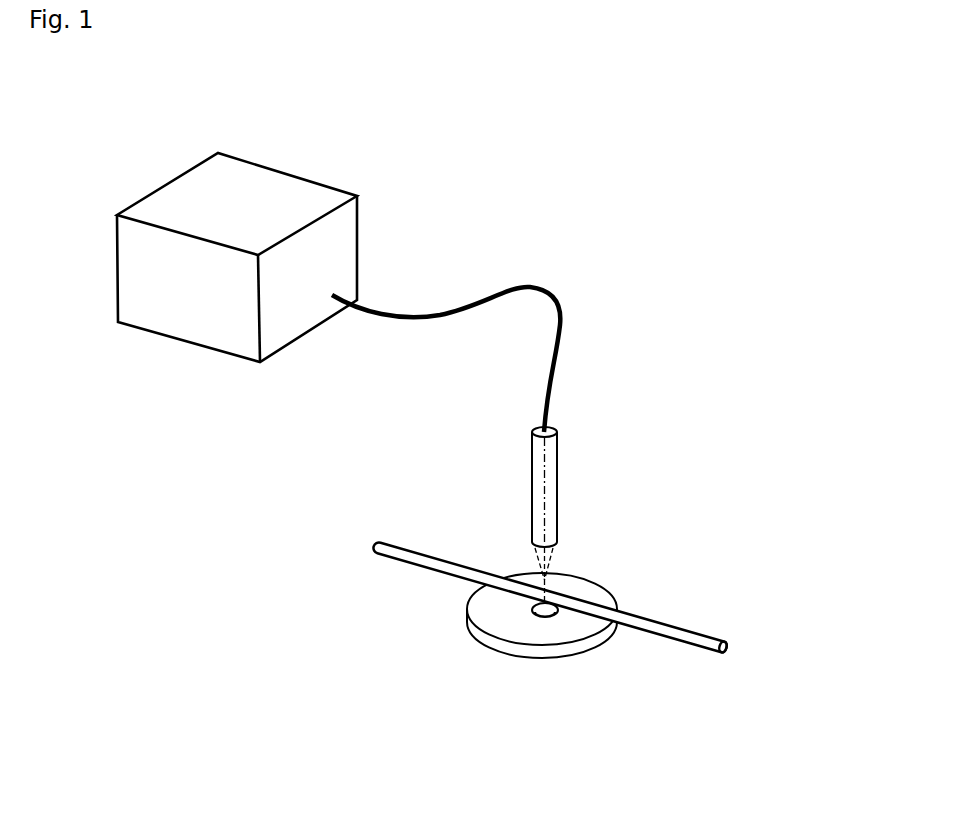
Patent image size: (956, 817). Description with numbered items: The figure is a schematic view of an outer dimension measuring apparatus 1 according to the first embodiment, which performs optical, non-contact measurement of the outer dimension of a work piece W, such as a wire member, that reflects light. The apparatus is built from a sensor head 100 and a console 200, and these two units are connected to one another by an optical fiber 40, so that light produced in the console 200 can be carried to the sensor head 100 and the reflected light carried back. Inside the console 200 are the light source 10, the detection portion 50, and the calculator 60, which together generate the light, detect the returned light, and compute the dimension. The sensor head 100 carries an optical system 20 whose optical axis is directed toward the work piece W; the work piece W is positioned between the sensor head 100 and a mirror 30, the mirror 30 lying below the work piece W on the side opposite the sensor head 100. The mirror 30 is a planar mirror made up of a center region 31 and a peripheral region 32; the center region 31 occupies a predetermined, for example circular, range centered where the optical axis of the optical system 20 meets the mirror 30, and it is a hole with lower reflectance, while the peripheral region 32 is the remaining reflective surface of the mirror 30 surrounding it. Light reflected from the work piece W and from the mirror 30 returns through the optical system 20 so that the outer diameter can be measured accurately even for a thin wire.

The outer dimension measuring apparatus 1 is at (653, 187).
The console 200 is at (178, 212).
The light source 10 is at (242, 198).
The detection portion 50 is at (277, 208).
The calculator 60 is at (332, 237).
The optical fiber 40 is at (530, 283).
The sensor head 100 is at (560, 453).
The optical system 20 is at (538, 479).
The mirror 30 is at (480, 613).
The center region 31 is at (562, 608).
The peripheral region 32 is at (510, 635).
The work piece W is at (725, 633).